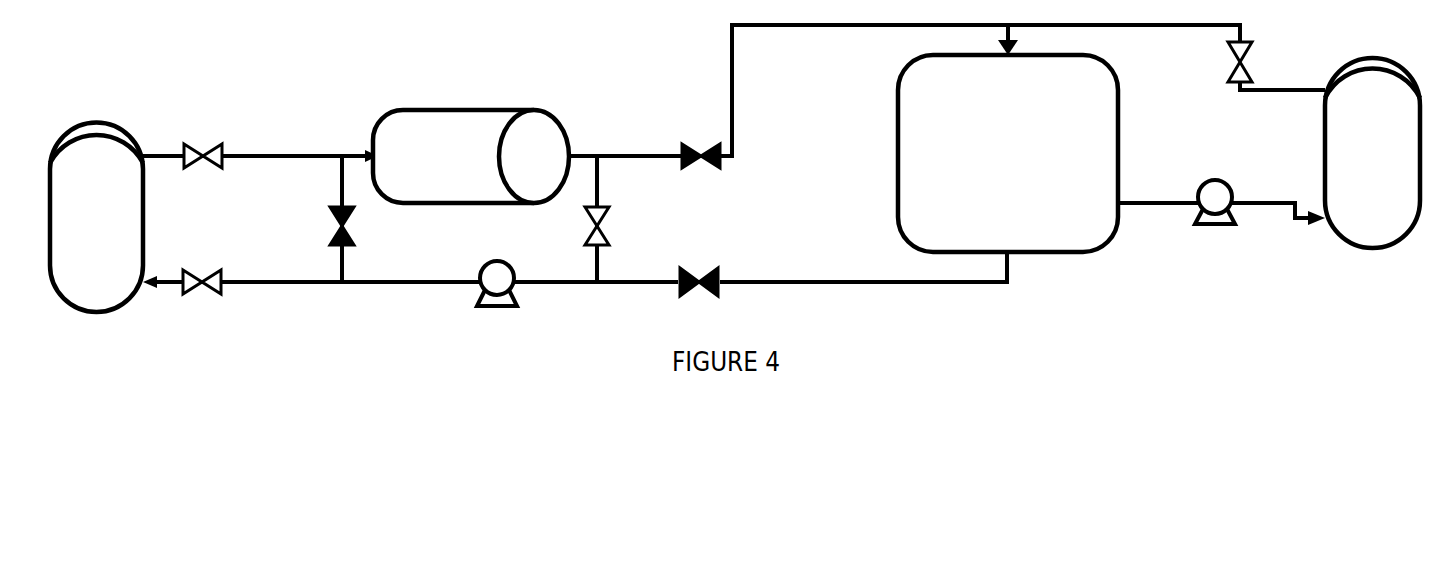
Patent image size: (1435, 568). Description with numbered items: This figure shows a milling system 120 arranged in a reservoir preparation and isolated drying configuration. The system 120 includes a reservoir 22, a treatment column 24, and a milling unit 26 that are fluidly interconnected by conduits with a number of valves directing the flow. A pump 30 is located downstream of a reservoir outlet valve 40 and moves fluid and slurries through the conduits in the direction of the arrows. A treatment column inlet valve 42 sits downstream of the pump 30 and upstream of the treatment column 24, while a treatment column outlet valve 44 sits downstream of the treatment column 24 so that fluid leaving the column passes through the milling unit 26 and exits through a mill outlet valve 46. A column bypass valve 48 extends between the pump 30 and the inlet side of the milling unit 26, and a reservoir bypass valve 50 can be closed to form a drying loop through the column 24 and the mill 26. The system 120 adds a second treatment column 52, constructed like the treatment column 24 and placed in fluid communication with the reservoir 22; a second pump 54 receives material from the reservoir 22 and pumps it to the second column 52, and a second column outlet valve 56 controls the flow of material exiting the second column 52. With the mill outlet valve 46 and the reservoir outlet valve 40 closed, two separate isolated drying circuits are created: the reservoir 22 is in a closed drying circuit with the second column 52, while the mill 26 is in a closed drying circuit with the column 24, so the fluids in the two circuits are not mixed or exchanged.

The milling system 120 is at (667, 69).
The reservoir 22 is at (1085, 250).
The treatment column 24 is at (143, 232).
The milling unit 26 is at (495, 125).
The pump 30 is at (512, 303).
The reservoir outlet valve 40 is at (716, 270).
The treatment column inlet valve 42 is at (222, 288).
The treatment column outlet valve 44 is at (222, 150).
The mill outlet valve 46 is at (712, 143).
The column bypass valve 48 is at (357, 233).
The reservoir bypass valve 50 is at (610, 228).
The second treatment column 52 is at (1370, 249).
The second pump 54 is at (1230, 226).
The second column outlet valve 56 is at (1250, 45).